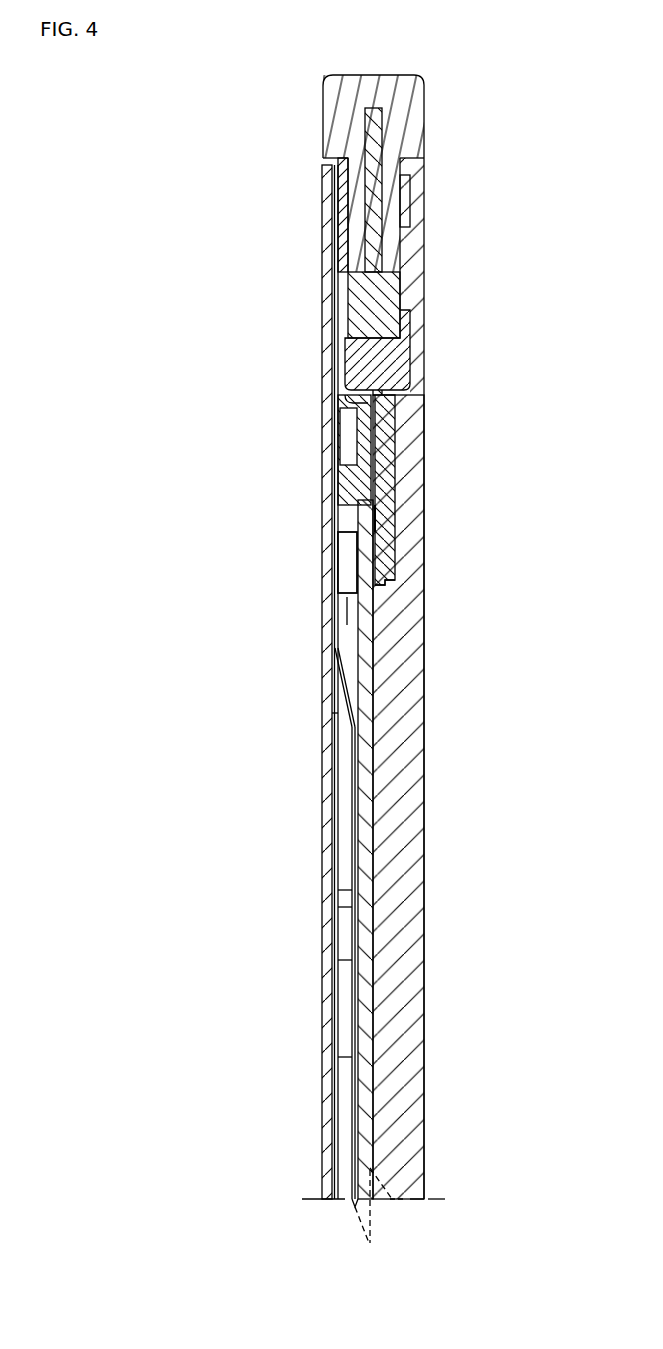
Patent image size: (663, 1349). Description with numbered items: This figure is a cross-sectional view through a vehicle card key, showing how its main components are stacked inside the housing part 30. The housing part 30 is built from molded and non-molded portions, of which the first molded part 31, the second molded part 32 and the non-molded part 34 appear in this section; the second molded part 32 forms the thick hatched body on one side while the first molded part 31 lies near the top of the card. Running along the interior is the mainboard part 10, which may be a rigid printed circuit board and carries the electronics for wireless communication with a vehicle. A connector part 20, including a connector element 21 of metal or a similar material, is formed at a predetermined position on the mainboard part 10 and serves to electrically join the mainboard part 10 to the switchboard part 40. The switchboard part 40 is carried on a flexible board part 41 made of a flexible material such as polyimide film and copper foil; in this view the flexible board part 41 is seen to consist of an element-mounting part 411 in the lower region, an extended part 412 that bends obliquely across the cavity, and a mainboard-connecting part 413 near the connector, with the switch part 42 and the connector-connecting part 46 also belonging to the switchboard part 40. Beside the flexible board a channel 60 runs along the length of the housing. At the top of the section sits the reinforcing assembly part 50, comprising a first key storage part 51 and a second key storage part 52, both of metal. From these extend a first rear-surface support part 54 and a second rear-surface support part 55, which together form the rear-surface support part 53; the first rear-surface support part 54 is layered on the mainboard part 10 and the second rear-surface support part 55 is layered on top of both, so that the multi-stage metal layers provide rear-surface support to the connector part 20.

The mainboard part 10 is at (365, 832).
The connector part 20 is at (272, 450).
The connector element 21 is at (459, 487).
The housing part 30 is at (414, 678).
The first molded part 31 is at (345, 403).
The second molded part 32 is at (400, 992).
The non-molded part 34 is at (350, 614).
The switchboard part 40 is at (368, 1128).
The flexible board part 41 is at (241, 852).
The element-mounting part 411 is at (269, 963).
The extended part 412 is at (338, 700).
The mainboard-connecting part 413 is at (340, 506).
The switch part 42 is at (340, 1010).
The connector-connecting part 46 is at (340, 490).
The reinforcing assembly part 50 is at (381, 239).
The first key storage part 51 is at (340, 220).
The second key storage part 52 is at (412, 322).
The rear-surface support part 53 is at (460, 541).
The first rear-surface support part 54 is at (378, 518).
The second rear-surface support part 55 is at (388, 577).
The channel 60 is at (345, 1133).